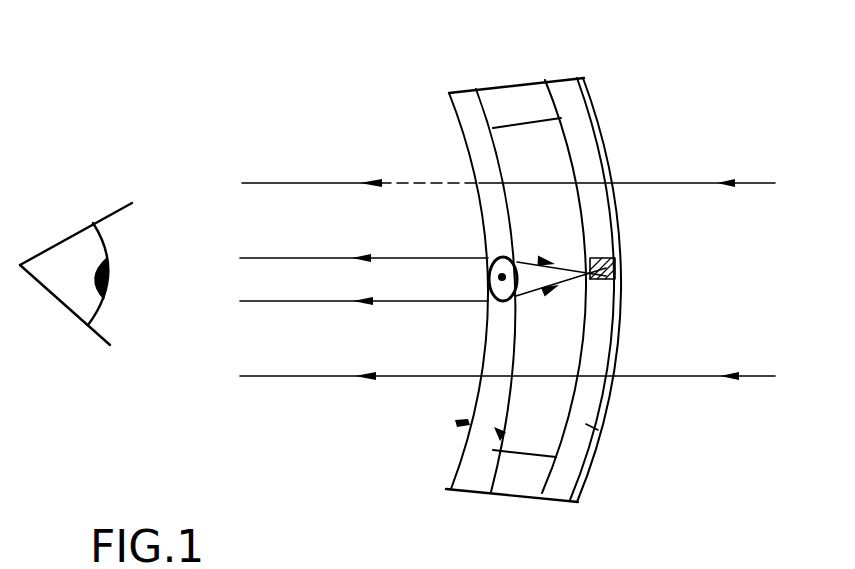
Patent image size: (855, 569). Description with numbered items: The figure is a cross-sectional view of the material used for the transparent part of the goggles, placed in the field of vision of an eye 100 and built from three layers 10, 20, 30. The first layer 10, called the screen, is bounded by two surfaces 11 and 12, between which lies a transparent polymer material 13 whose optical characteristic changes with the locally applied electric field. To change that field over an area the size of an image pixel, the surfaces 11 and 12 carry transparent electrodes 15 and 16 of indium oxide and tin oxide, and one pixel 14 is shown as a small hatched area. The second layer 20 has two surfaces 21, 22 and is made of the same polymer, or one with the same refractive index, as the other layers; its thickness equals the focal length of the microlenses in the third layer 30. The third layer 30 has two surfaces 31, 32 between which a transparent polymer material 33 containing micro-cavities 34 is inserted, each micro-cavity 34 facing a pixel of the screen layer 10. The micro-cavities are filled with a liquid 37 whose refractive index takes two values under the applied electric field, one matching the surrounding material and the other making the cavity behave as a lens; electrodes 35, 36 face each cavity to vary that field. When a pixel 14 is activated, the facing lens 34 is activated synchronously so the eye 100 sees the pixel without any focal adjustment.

The eye 100 is at (67, 248).
The first layer 10 is at (562, 480).
The surface of first layer 11 is at (605, 162).
The surface of first layer 12 is at (572, 152).
The transparent polymer material 13 is at (587, 423).
The pixel 14 is at (623, 278).
The transparent electrode 15 is at (623, 267).
The transparent electrode 16 is at (592, 273).
The second layer 20 is at (520, 435).
The surface of second layer 21 is at (583, 207).
The surface of second layer 22 is at (517, 245).
The third layer 30 is at (467, 468).
The surface of third layer 31 is at (487, 112).
The surface of third layer 32 is at (457, 113).
The transparent polymer material 33 is at (470, 112).
The micro-cavity 34 is at (490, 262).
The electrode 35 is at (500, 470).
The electrode 36 is at (463, 422).
The liquid 37 is at (492, 298).